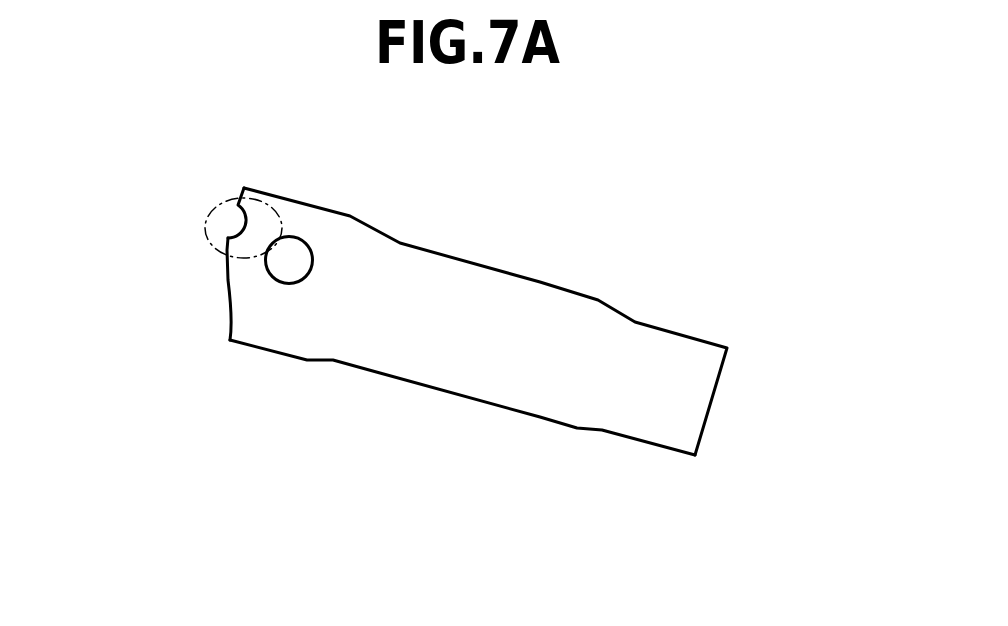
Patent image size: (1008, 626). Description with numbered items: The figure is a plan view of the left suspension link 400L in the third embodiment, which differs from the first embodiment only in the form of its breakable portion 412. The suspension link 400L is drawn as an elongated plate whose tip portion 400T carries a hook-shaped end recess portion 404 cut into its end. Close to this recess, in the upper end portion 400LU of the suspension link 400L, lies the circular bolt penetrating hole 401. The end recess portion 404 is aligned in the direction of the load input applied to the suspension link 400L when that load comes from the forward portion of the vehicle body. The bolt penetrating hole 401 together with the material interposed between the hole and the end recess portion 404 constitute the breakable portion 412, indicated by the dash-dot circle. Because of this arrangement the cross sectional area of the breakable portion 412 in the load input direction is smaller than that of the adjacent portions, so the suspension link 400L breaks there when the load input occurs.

The end recess portion 404 is at (242, 223).
The breakable portion 412 is at (205, 229).
The bolt penetrating hole 401 is at (313, 260).
The tip portion 400T is at (227, 293).
The upper end portion 400LU is at (279, 342).
The suspension link 400L is at (472, 309).